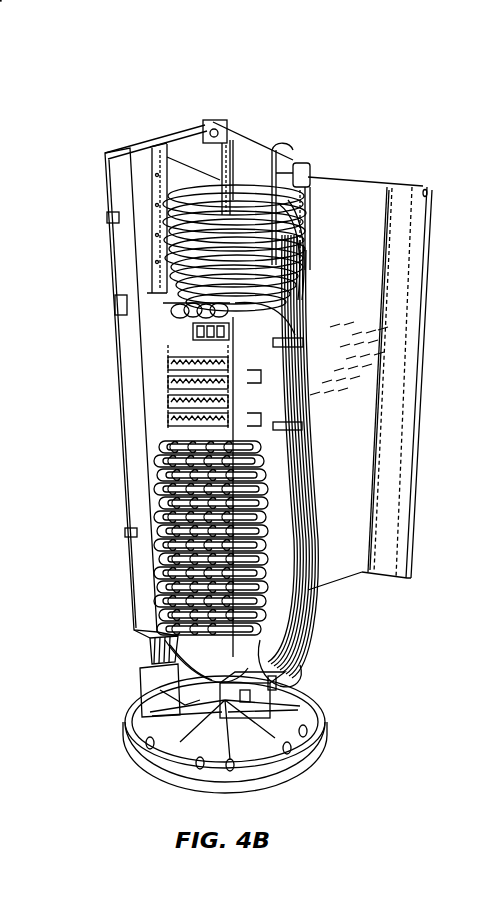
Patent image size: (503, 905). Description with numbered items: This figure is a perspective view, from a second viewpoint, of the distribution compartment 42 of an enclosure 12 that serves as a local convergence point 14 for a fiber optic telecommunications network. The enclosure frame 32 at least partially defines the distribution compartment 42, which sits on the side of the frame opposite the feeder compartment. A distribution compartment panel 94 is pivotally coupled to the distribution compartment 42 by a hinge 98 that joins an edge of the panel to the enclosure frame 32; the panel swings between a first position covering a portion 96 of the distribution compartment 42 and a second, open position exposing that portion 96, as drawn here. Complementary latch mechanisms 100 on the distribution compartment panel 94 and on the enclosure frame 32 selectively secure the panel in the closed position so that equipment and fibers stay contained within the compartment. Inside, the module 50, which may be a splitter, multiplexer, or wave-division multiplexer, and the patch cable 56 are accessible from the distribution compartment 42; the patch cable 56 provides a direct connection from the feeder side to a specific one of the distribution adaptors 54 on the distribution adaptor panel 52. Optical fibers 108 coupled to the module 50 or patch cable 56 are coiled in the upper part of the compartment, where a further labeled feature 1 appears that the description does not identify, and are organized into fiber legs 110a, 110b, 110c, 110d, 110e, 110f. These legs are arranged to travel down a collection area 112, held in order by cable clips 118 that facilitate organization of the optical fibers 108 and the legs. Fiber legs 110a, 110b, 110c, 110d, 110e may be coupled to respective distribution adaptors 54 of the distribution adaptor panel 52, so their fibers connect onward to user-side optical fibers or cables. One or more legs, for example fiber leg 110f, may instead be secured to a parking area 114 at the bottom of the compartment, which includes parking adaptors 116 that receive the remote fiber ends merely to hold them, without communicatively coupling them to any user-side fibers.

The enclosure 12 is at (127, 48).
The enclosure frame 32 is at (197, 173).
The distribution compartment 42 is at (146, 389).
The local convergence point 14 is at (242, 183).
The latch mechanisms 100 is at (216, 122).
The optical fibers 108 is at (243, 188).
The hinge 98 is at (308, 215).
The cable loop bundle 1 is at (305, 257).
The collection area 112 is at (334, 290).
The distribution compartment panel 94 is at (430, 272).
The portion of the distribution compartment 96 is at (314, 410).
The patch cable 56 is at (168, 320).
The module 50 is at (192, 335).
The distribution adaptor panel 52 is at (163, 413).
The distribution adaptors 54 is at (157, 440).
The cable clips 118 is at (299, 338).
The fiber leg 110a is at (262, 446).
The fiber leg 110b is at (232, 486).
The fiber leg 110c is at (270, 516).
The fiber leg 110d is at (303, 567).
The fiber leg 110e is at (292, 632).
The fiber leg 110f is at (298, 650).
The parking adaptors 116 is at (160, 643).
The parking area 114 is at (155, 698).